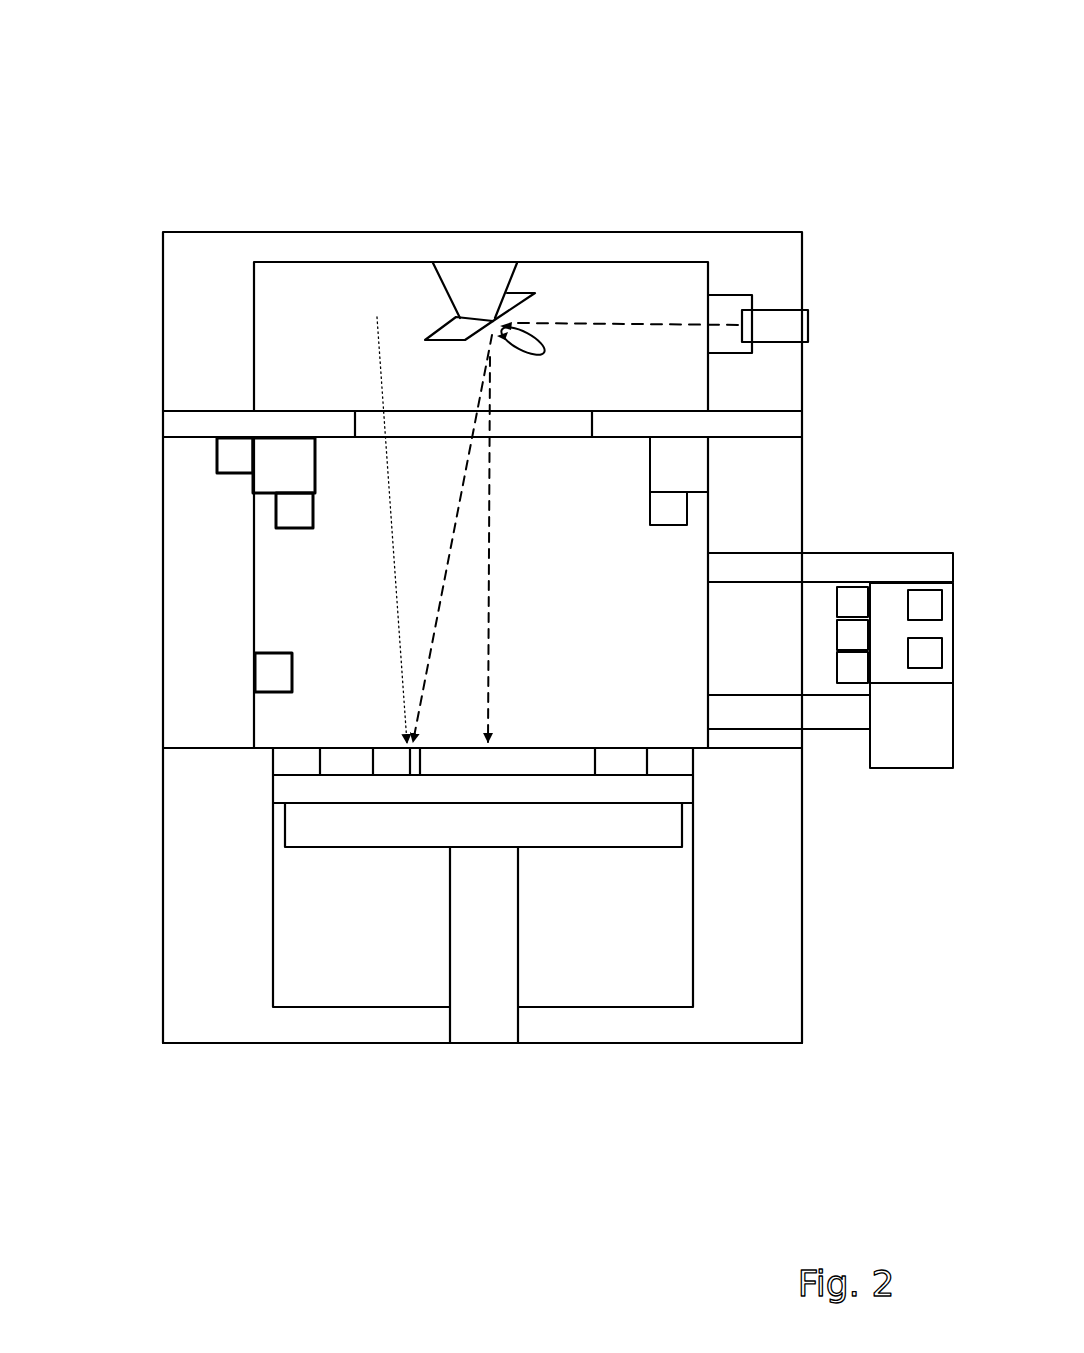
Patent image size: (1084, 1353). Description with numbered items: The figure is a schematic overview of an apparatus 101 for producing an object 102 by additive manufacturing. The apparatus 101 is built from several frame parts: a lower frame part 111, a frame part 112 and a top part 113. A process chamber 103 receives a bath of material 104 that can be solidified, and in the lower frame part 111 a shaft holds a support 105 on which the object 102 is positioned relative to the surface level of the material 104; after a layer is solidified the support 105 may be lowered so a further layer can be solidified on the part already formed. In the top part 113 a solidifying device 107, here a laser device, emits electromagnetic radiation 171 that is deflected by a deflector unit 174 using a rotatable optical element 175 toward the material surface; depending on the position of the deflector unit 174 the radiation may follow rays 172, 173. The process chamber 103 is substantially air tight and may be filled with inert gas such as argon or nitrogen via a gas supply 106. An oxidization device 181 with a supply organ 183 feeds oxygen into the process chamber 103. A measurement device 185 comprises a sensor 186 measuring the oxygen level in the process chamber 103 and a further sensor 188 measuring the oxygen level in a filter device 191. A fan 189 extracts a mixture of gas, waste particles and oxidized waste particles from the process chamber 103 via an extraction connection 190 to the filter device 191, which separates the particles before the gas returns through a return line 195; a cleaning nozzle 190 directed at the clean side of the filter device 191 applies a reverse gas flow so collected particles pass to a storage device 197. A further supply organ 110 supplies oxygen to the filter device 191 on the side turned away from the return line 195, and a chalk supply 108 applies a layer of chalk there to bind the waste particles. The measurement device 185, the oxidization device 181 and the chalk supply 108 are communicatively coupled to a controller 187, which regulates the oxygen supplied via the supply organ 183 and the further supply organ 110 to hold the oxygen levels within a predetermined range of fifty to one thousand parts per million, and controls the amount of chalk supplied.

The apparatus 101 is at (215, 203).
The top part 113 is at (197, 320).
The lower frame part 111 is at (200, 940).
The frame part 112 is at (200, 625).
The ray 172 is at (437, 603).
The process chamber 103 is at (318, 629).
The solidifying device 107 is at (757, 325).
The electromagnetic radiation 171 is at (638, 323).
The deflector unit 174 is at (472, 278).
The rotatable optical element 175 is at (497, 318).
The ray 173 is at (490, 585).
The oxidization device 181 is at (287, 460).
The controller 187 is at (227, 457).
The supply organ 183 is at (295, 494).
The measurement device 185 is at (685, 478).
The sensor 186 is at (668, 517).
The gas supply 106 is at (263, 673).
The object 102 is at (352, 758).
The bath of material 104 is at (533, 628).
The support 105 is at (640, 875).
The return line 195 is at (863, 567).
The extraction connection 190 is at (928, 605).
The filter device 191 is at (885, 593).
The fan 189 is at (895, 713).
The further sensor 188 is at (933, 650).
The storage device 197 is at (855, 602).
The chalk supply 108 is at (855, 637).
The further supply organ 110 is at (855, 670).